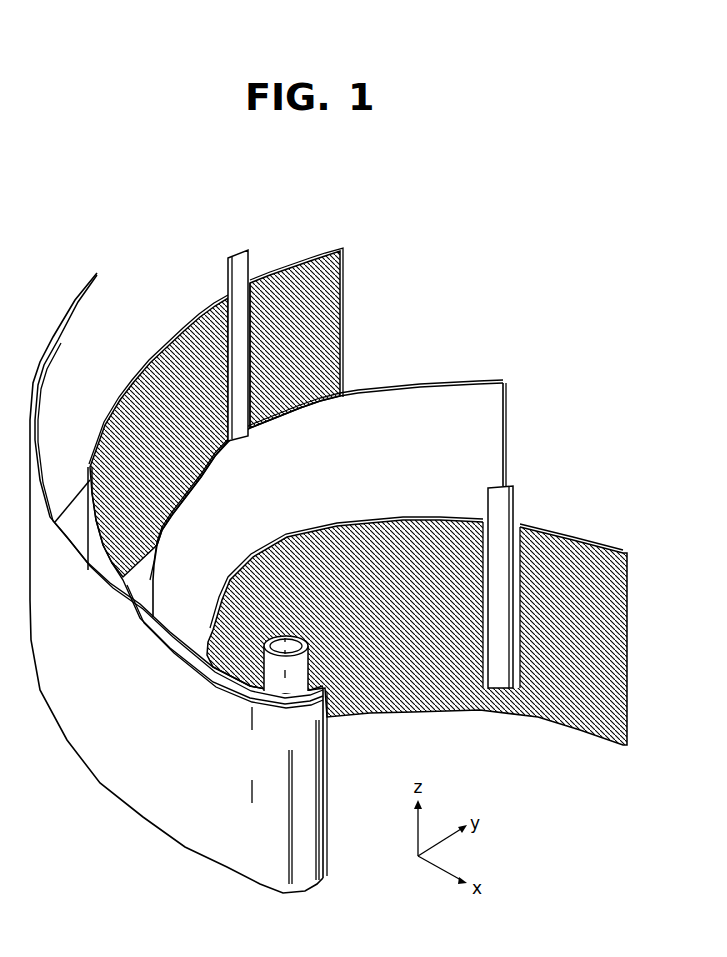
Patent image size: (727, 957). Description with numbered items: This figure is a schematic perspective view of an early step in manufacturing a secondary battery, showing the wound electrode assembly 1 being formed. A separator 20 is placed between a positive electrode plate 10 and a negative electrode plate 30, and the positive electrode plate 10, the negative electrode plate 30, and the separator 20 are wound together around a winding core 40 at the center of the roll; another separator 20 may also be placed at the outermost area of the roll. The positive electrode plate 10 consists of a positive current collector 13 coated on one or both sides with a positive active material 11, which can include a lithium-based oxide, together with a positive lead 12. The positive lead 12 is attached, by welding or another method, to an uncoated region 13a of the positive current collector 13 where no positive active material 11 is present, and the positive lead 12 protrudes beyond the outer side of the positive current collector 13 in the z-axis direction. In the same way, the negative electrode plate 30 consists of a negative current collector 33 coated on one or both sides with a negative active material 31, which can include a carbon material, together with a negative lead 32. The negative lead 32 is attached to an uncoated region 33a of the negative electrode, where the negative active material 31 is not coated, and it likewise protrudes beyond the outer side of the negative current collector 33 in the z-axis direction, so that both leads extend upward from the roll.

The electrode assembly 1 is at (504, 266).
The positive electrode plate 10 is at (239, 371).
The positive active material 11 is at (316, 275).
The positive lead 12 is at (246, 308).
The positive current collector 13 is at (343, 289).
The uncoated region 13a is at (255, 298).
The separator 20 is at (72, 307).
The negative electrode plate 30 is at (429, 589).
The negative active material 31 is at (583, 557).
The negative lead 32 is at (515, 564).
The negative current collector 33 is at (623, 553).
The uncoated region 33a is at (517, 557).
The winding core 40 is at (270, 673).